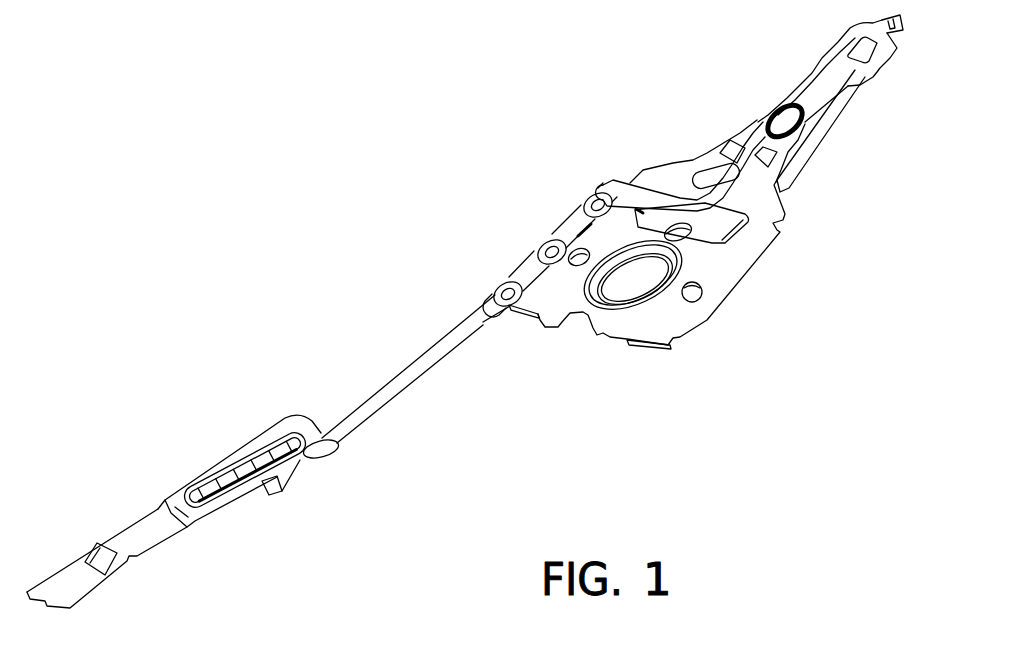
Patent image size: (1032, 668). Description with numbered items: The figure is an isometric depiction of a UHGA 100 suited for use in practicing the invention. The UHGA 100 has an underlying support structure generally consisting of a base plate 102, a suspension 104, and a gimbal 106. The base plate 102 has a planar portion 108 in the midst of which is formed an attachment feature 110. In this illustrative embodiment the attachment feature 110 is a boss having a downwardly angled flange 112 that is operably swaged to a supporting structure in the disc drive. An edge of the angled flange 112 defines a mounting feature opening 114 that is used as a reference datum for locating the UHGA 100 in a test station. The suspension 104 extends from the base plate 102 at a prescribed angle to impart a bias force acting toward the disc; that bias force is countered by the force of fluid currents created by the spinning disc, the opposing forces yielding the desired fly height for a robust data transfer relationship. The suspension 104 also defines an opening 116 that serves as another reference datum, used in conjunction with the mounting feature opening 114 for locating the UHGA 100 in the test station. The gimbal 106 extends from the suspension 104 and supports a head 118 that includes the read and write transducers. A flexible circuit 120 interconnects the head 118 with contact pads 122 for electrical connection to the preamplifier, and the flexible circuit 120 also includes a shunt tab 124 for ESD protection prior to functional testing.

The UHGA 100 is at (464, 105).
The base plate 102 is at (688, 338).
The suspension 104 is at (793, 143).
The gimbal 106 is at (893, 62).
The planar portion 108 is at (618, 232).
The attachment feature 110 is at (613, 299).
The angled flange 112 is at (690, 285).
The mounting feature opening 114 is at (598, 311).
The opening 116 is at (784, 118).
The head 118 is at (858, 47).
The flexible circuit 120 is at (370, 407).
The contact pads 122 is at (233, 472).
The shunt tab 124 is at (130, 557).